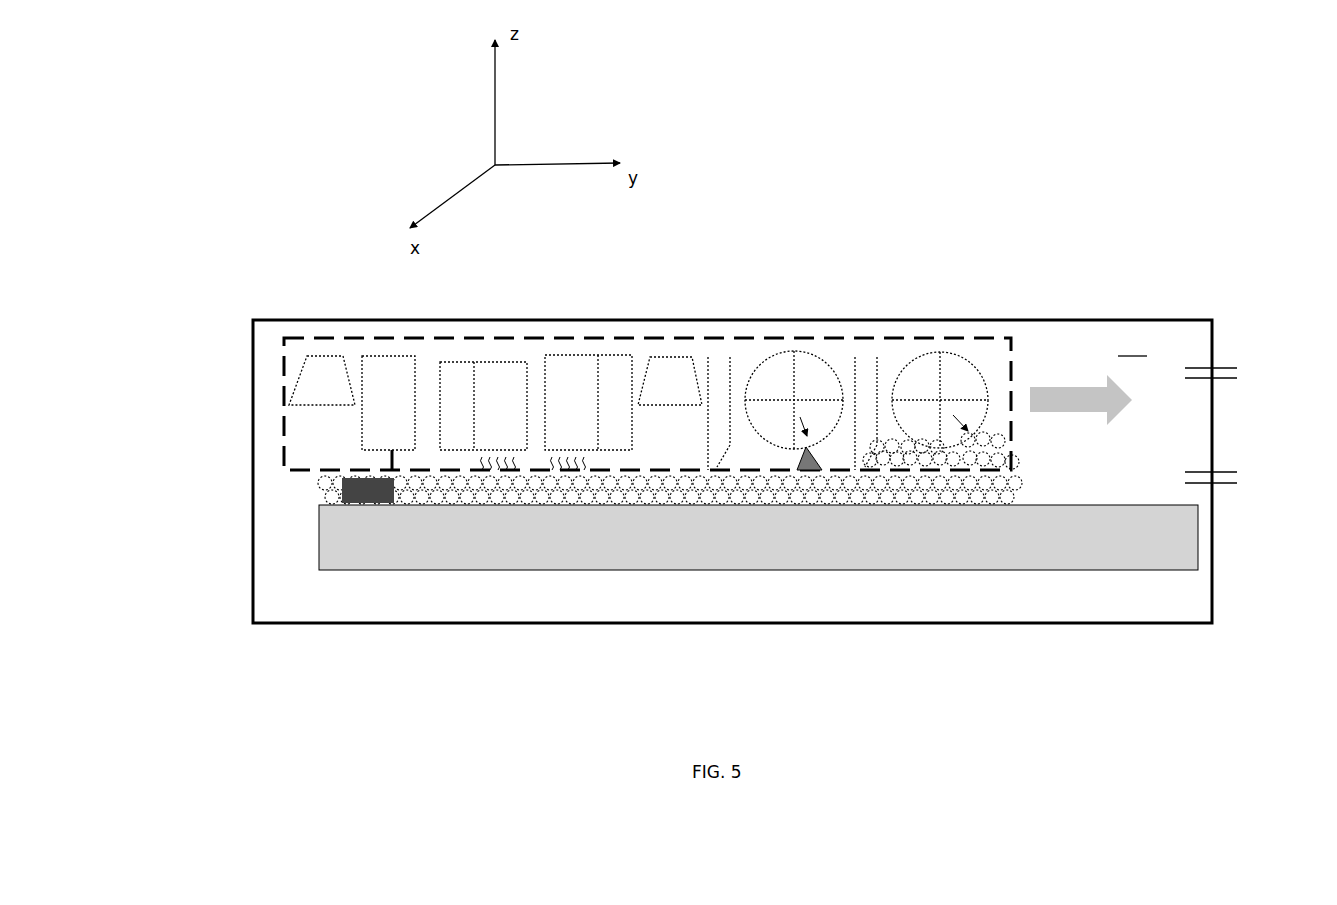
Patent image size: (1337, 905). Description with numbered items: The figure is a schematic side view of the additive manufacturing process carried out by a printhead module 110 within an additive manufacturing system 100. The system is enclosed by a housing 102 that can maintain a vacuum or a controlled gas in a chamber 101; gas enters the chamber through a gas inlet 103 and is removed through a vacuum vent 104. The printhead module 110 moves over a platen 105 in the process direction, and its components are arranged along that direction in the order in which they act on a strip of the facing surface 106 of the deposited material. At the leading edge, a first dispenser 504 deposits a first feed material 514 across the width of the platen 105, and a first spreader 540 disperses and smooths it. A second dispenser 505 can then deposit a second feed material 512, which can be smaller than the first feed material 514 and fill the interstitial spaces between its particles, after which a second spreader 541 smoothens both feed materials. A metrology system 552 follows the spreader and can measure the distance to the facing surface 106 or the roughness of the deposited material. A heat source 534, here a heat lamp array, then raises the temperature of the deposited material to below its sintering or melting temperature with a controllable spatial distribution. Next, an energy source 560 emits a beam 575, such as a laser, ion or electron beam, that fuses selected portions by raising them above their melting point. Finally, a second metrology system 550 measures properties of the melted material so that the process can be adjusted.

The additive manufacturing system 100 is at (777, 176).
The chamber 101 is at (1134, 347).
The housing 102 is at (1115, 318).
The gas inlet 103 is at (1215, 375).
The vacuum vent 104 is at (1225, 475).
The platen 105 is at (1112, 572).
The facing surface 106 is at (631, 468).
The printhead module 110 is at (993, 337).
The first dispenser 504 is at (960, 375).
The second dispenser 505 is at (775, 363).
The second feed material 512 is at (810, 458).
The first feed material 514 is at (988, 495).
The heat source 534 is at (504, 377).
The first spreader 540 is at (862, 363).
The second spreader 541 is at (722, 372).
The second metrology system 550 is at (315, 380).
The metrology system 552 is at (663, 363).
The energy source 560 is at (395, 372).
The beam 575 is at (392, 465).